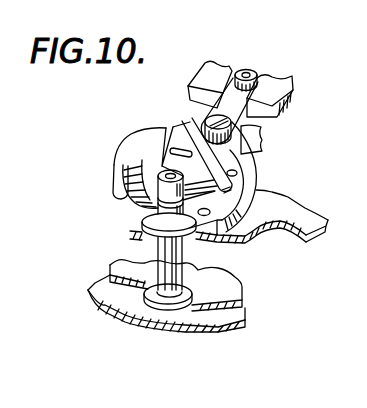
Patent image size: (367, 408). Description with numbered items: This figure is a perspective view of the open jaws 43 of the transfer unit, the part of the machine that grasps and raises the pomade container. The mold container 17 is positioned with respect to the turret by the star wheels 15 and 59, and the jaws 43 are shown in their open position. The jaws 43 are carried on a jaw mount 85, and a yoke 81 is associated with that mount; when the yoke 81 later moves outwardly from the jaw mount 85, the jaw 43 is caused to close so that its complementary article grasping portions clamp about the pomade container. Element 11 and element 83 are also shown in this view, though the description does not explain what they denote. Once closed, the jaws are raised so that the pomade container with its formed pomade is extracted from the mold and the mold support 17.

The base plate 11 is at (245, 318).
The mold container 17 is at (143, 305).
The star wheel 15 is at (222, 290).
The jaws 43 is at (258, 187).
The star wheel 59 is at (318, 234).
The yoke 81 is at (210, 105).
The pivot arm 83 is at (258, 135).
The jaw mount 85 is at (290, 112).